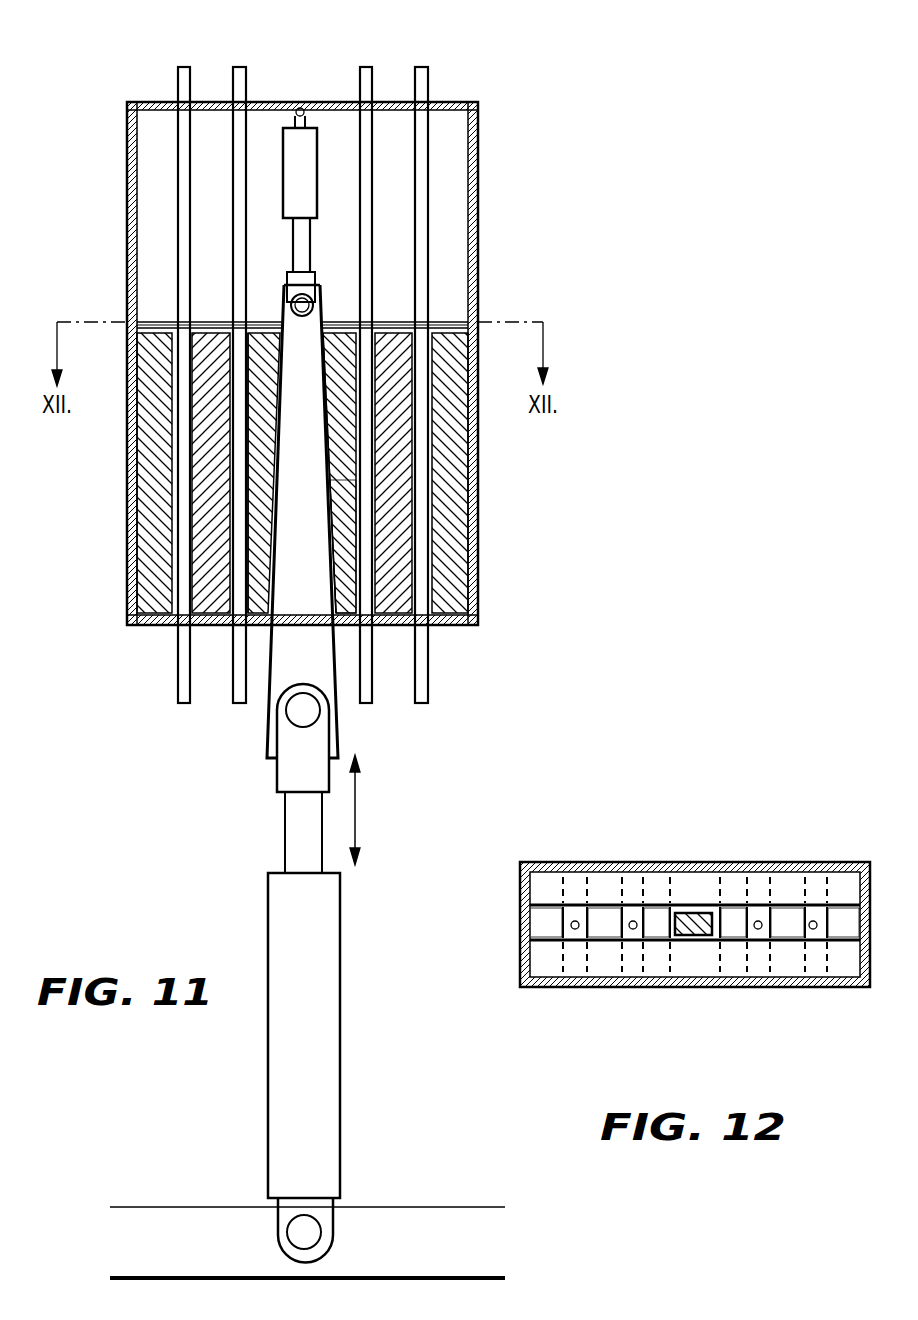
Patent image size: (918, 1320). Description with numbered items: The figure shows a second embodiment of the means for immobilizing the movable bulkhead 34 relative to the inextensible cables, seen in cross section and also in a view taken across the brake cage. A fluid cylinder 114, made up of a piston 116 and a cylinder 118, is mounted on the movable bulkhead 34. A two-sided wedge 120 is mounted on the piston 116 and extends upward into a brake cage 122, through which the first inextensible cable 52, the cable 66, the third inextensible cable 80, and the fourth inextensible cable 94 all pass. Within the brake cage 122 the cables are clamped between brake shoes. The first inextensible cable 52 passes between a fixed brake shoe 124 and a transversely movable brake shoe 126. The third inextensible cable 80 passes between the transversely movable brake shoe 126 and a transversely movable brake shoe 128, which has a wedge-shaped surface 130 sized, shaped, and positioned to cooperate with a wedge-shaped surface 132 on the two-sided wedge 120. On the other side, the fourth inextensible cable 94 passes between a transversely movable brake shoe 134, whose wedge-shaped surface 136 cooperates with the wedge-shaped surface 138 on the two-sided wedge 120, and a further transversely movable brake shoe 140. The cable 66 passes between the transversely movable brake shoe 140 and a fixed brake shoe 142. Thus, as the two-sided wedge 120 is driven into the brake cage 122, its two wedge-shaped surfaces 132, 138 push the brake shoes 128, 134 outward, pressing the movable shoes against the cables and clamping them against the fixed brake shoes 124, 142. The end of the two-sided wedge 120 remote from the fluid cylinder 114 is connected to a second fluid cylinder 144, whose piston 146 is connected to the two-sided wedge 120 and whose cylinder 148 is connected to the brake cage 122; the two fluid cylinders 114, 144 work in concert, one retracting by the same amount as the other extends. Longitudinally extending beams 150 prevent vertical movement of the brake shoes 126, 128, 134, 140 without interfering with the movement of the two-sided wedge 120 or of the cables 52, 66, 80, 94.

In FIG. 11, the movable bulkhead 34 is at (473, 1207).
In FIG. 11, the first inextensible cable 52 is at (177, 82).
In FIG. 12, the first inextensible cable 52 is at (578, 922).
In FIG. 11, the inextensible cable 66 is at (428, 82).
In FIG. 12, the inextensible cable 66 is at (816, 922).
In FIG. 11, the third inextensible cable 80 is at (233, 82).
In FIG. 12, the third inextensible cable 80 is at (636, 922).
In FIG. 11, the fourth inextensible cable 94 is at (372, 78).
In FIG. 12, the fourth inextensible cable 94 is at (755, 922).
In FIG. 11, the fluid cylinder 114 is at (303, 1027).
In FIG. 11, the piston 116 is at (290, 810).
In FIG. 11, the cylinder 118 is at (270, 903).
In FIG. 11, the two-sided wedge 120 is at (333, 683).
In FIG. 12, the two-sided wedge 120 is at (688, 912).
In FIG. 11, the brake cage 122 is at (478, 527).
In FIG. 12, the brake cage 122 is at (797, 862).
In FIG. 11, the fixed brake shoe 124 is at (142, 503).
In FIG. 12, the fixed brake shoe 124 is at (548, 930).
In FIG. 11, the transversely movable brake shoe 126 is at (200, 553).
In FIG. 12, the transversely movable brake shoe 126 is at (607, 930).
In FIG. 11, the transversely movable brake shoe 128 is at (252, 583).
In FIG. 12, the transversely movable brake shoe 128 is at (657, 930).
In FIG. 11, the wedge-shaped surface 130 is at (283, 440).
In FIG. 11, the wedge-shaped surface 132 is at (135, 356).
In FIG. 11, the transversely movable brake shoe 134 is at (355, 448).
In FIG. 12, the transversely movable brake shoe 134 is at (733, 930).
In FIG. 11, the wedge-shaped surface 136 is at (322, 470).
In FIG. 11, the wedge-shaped surface 138 is at (333, 500).
In FIG. 11, the transversely movable brake shoe 140 is at (403, 560).
In FIG. 12, the transversely movable brake shoe 140 is at (783, 930).
In FIG. 11, the fixed brake shoe 142 is at (460, 597).
In FIG. 12, the fixed brake shoe 142 is at (843, 930).
In FIG. 11, the fluid cylinder 144 is at (304, 148).
In FIG. 11, the piston 146 is at (297, 256).
In FIG. 11, the cylinder 148 is at (316, 200).
In FIG. 11, the longitudinally extending beams 150 is at (443, 325).
In FIG. 12, the longitudinally extending beams 150 is at (532, 955).